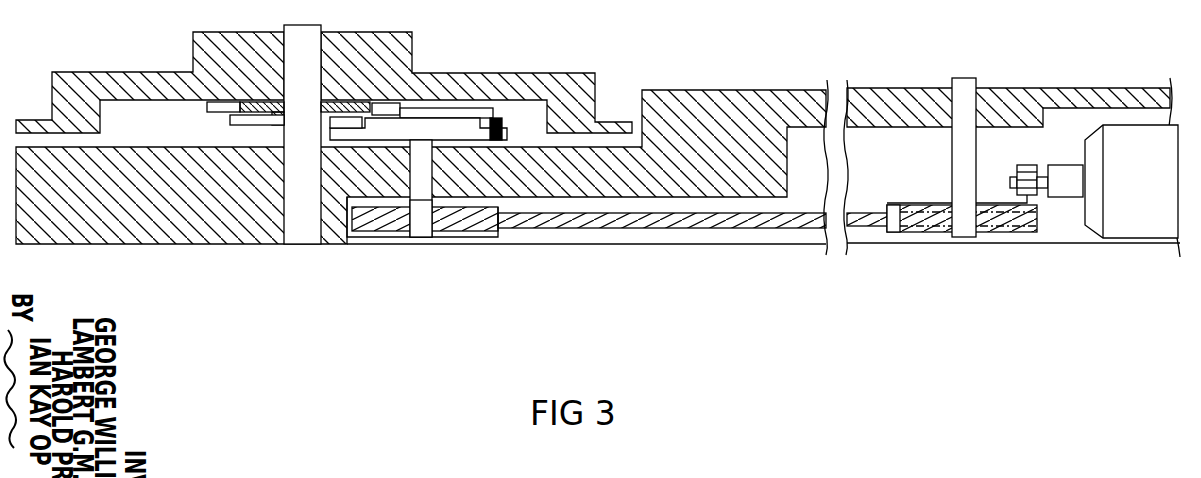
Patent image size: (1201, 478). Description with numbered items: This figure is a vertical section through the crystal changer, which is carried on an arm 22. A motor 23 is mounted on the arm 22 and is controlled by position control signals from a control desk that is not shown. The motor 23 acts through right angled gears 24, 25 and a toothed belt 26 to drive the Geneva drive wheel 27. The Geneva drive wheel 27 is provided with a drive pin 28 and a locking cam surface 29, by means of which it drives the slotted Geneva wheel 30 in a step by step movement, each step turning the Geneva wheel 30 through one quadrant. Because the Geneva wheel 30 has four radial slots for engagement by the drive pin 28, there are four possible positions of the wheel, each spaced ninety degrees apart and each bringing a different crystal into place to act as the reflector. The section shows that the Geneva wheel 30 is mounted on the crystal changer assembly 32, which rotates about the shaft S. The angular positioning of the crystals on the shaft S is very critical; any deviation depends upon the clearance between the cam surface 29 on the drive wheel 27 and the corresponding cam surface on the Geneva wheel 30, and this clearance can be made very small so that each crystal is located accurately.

The arm 22 is at (893, 88).
The motor 23 is at (1142, 222).
The right angled gear 24 is at (1020, 166).
The right angled gear 25 is at (896, 205).
The toothed belt 26 is at (765, 230).
The Geneva drive wheel 27 is at (462, 118).
The drive pin 28 is at (498, 118).
The locking cam surface 29 is at (372, 128).
The slotted Geneva wheel 30 is at (220, 113).
The crystal changer assembly 32 is at (85, 72).
The shaft S is at (284, 129).